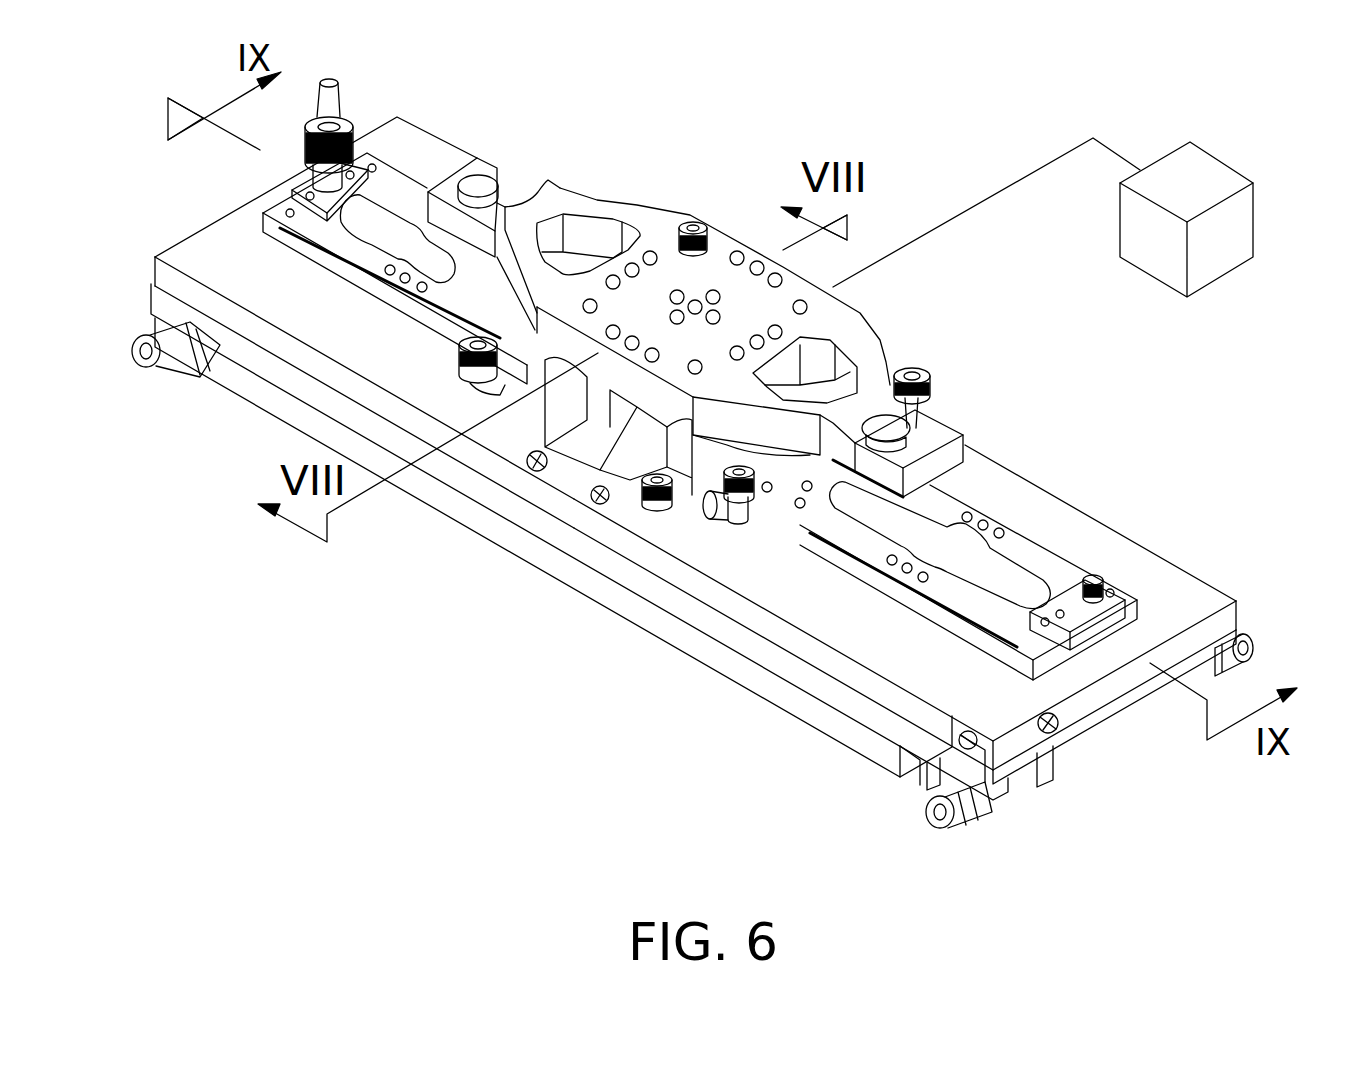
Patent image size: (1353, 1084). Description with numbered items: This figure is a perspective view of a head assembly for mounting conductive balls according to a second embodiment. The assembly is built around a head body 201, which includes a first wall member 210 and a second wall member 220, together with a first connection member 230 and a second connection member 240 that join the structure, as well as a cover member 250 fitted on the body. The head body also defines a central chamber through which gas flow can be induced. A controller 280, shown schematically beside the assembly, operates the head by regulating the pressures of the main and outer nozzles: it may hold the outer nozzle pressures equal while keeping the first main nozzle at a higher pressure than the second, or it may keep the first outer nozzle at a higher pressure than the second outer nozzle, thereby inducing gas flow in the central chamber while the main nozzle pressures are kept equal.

The head body 201 is at (903, 319).
The first wall member 210 is at (533, 547).
The second wall member 220 is at (1020, 467).
The first connection member 230 is at (1097, 743).
The second connection member 240 is at (187, 247).
The cover member 250 is at (1087, 523).
The controller 280 is at (1212, 167).